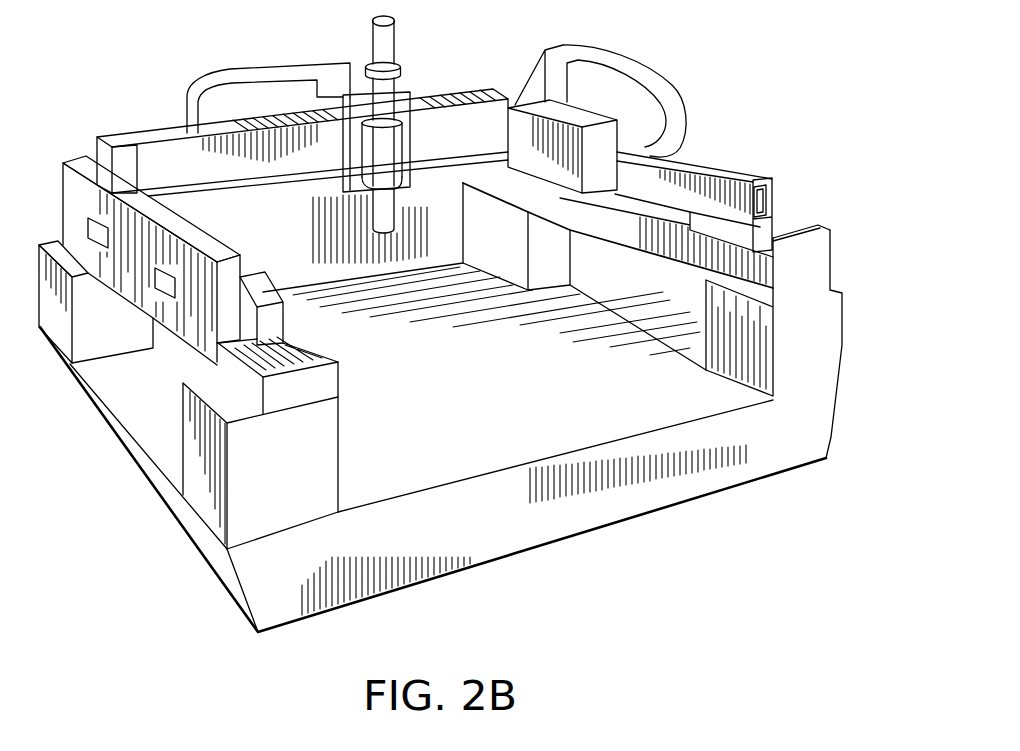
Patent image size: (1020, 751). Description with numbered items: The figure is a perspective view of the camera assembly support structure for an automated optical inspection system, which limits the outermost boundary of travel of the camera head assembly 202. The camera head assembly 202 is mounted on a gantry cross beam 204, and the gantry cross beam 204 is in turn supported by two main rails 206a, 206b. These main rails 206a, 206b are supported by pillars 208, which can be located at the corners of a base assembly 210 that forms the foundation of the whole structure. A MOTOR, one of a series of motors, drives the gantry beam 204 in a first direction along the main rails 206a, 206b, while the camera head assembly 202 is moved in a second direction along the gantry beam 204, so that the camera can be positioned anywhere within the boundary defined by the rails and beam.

The camera head assembly 202 is at (405, 145).
The gantry cross beam 204 is at (155, 133).
The main rail 206a is at (213, 250).
The main rail 206b is at (733, 175).
The pillars 208 is at (93, 335).
The base assembly 210 is at (553, 508).
The motor MOTOR is at (600, 148).